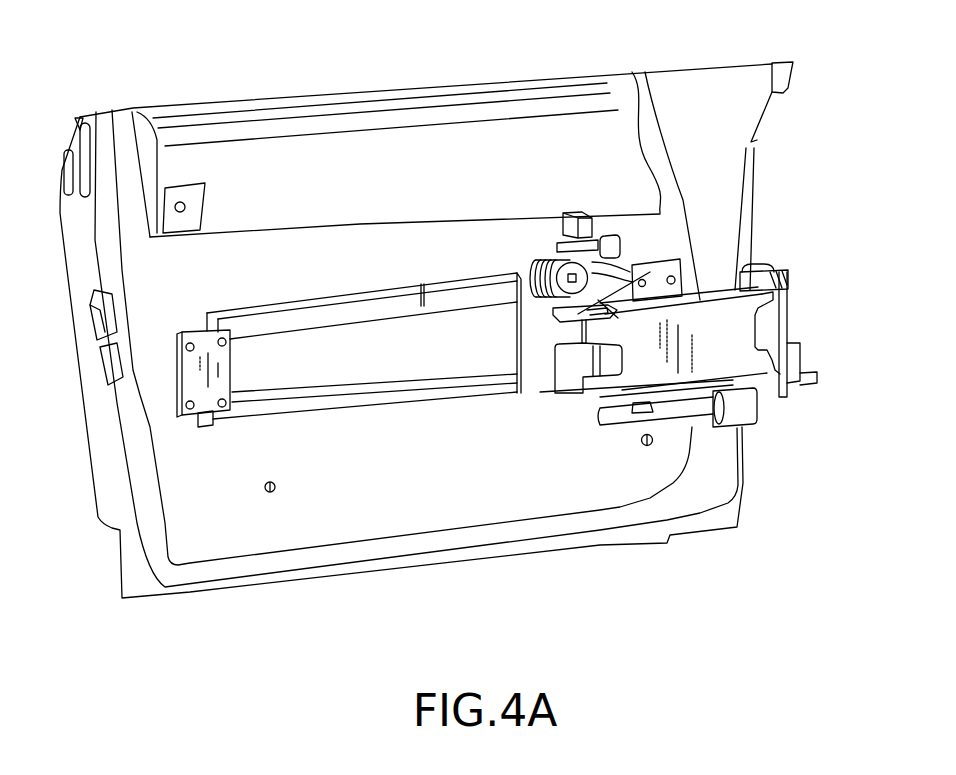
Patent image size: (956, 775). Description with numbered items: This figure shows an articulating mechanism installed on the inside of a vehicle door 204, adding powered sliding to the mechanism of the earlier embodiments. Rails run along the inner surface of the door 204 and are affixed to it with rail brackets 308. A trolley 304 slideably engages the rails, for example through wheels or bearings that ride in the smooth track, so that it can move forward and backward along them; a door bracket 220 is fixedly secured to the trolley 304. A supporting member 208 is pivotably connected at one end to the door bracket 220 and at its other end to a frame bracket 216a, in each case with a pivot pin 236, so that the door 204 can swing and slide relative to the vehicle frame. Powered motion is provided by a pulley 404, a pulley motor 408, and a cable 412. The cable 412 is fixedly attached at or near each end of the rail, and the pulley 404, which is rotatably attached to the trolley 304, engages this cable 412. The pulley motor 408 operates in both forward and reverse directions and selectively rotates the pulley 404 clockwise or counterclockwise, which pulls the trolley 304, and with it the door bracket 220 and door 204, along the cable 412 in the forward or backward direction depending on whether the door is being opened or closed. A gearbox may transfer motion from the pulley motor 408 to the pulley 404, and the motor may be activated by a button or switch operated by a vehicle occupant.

The door 204 is at (340, 103).
The supporting member 208 is at (717, 322).
The latch 216a is at (780, 268).
The door bracket 220 is at (641, 266).
The pivot pin 236 is at (788, 274).
The trolley 304 is at (663, 277).
The rail bracket 308 is at (195, 376).
The pulley 404 is at (558, 243).
The pulley motor 408 is at (612, 246).
The cable 412 is at (424, 315).